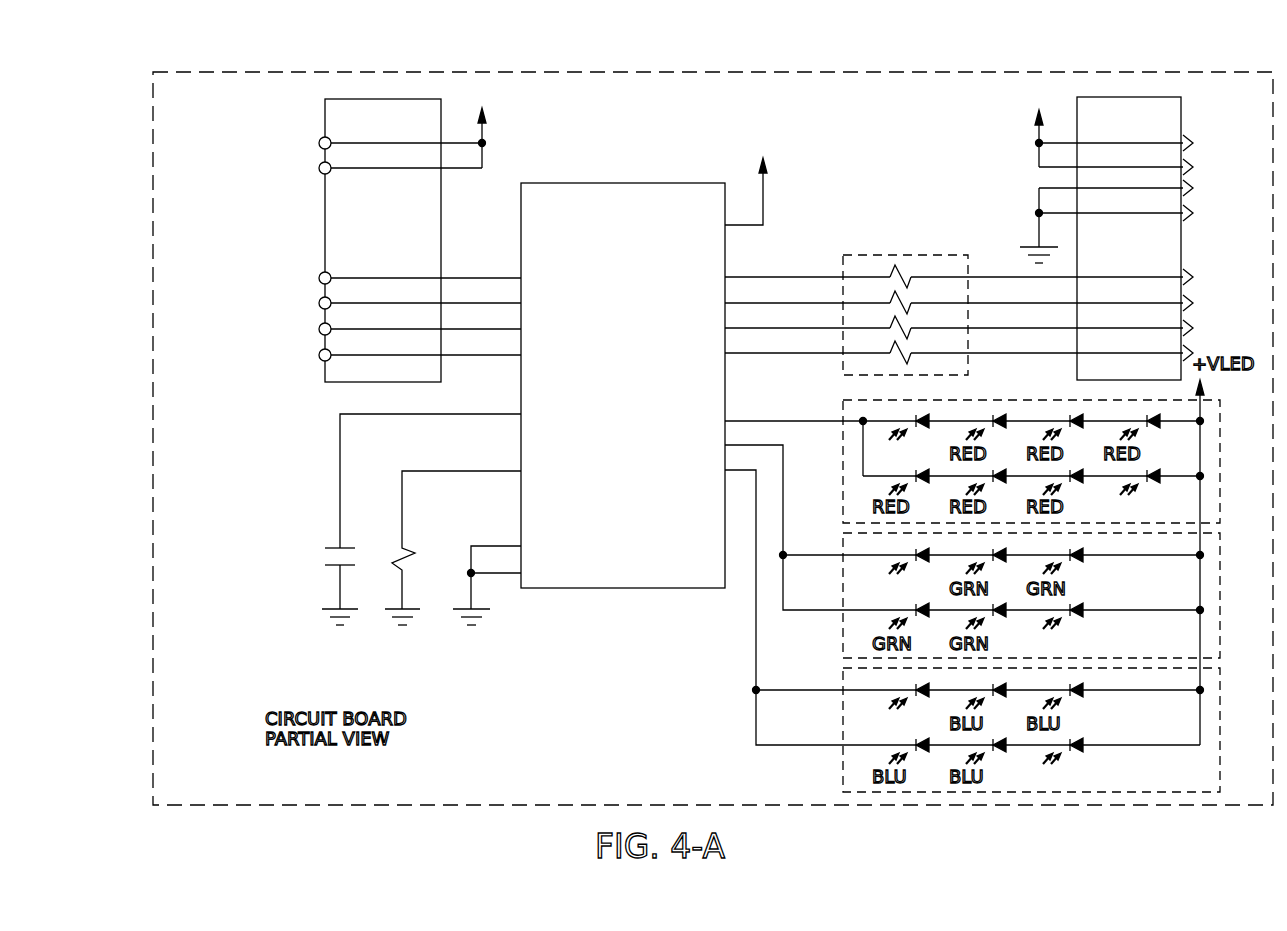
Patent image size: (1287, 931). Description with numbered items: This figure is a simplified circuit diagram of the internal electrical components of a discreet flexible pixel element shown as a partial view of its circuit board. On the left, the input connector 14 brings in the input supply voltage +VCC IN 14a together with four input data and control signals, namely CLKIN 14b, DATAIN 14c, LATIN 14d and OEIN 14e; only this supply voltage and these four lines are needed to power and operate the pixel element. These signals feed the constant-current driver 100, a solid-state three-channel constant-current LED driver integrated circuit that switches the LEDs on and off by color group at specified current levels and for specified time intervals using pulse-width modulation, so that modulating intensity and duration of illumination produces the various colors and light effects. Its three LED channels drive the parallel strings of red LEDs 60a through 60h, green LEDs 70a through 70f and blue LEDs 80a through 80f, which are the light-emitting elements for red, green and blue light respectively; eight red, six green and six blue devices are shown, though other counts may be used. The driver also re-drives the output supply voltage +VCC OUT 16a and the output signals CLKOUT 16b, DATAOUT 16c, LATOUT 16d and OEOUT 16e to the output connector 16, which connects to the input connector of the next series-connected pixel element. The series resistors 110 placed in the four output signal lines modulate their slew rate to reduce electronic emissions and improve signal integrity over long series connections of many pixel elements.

The input connector 14 is at (349, 236).
The input supply voltage +VCC IN 14a is at (379, 128).
The CLKIN input signal 14b is at (379, 261).
The DATAIN input signal 14c is at (379, 292).
The LATIN input signal 14d is at (379, 328).
The OEIN input signal 14e is at (379, 356).
The constant-current driver 100 is at (557, 380).
The series resistors 110 is at (905, 289).
The output connector 16 is at (1161, 231).
The output supply voltage +VCC OUT 16a is at (1120, 172).
The CLKOUT output signal 16b is at (995, 269).
The DATAOUT output signal 16c is at (990, 297).
The LATOUT output signal 16d is at (990, 319).
The OEOUT output signal 16e is at (996, 342).
The red LED 60a is at (856, 423).
The red LED 60h is at (1184, 470).
The green LED 70a is at (860, 559).
The green LED 70f is at (1143, 628).
The blue LED 80a is at (854, 703).
The blue LED 80f is at (1144, 762).